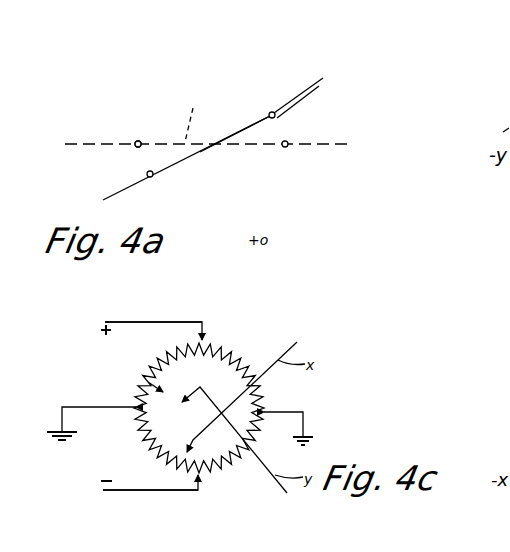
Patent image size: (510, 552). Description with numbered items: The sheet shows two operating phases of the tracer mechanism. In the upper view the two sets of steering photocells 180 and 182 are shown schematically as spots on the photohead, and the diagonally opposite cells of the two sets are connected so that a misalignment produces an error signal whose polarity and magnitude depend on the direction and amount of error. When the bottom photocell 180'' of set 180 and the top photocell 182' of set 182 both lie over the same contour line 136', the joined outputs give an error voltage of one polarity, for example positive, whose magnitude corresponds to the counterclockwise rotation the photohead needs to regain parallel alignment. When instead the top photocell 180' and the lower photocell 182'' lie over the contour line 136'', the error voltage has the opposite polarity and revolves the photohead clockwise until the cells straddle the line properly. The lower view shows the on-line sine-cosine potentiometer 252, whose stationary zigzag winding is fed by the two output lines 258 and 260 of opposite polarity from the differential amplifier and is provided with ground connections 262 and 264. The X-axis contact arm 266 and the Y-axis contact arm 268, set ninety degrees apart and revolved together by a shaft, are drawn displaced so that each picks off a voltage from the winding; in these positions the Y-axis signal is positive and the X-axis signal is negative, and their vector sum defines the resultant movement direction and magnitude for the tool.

In FIG. 4A, the steering photocell set 180 is at (152, 120).
In FIG. 4A, the top photocell 180' is at (113, 163).
In FIG. 4A, the bottom photocell 180'' is at (183, 182).
In FIG. 4A, the contour line 136' is at (236, 105).
In FIG. 4A, the contour line 136'' is at (203, 115).
In FIG. 4A, the steering photocell set 182 is at (293, 82).
In FIG. 4A, the top photocell 182' is at (311, 91).
In FIG. 4A, the lower photocell 182'' is at (323, 130).
In FIG. 4C, the on-line sine-cosine potentiometer 252 is at (136, 390).
In FIG. 4C, the output line 258 is at (153, 322).
In FIG. 4C, the output line 260 is at (137, 490).
In FIG. 4C, the ground connection 262 is at (55, 441).
In FIG. 4C, the ground connection 264 is at (312, 436).
In FIG. 4C, the X-axis contact arm 266 is at (190, 440).
In FIG. 4C, the Y-axis contact arm 268 is at (183, 400).